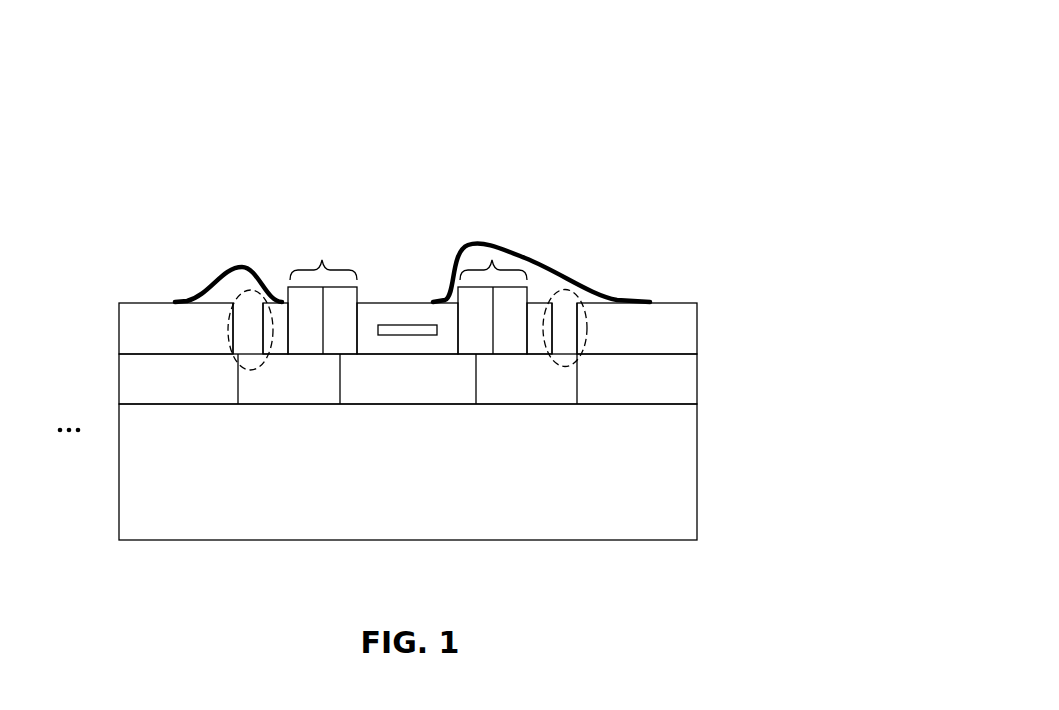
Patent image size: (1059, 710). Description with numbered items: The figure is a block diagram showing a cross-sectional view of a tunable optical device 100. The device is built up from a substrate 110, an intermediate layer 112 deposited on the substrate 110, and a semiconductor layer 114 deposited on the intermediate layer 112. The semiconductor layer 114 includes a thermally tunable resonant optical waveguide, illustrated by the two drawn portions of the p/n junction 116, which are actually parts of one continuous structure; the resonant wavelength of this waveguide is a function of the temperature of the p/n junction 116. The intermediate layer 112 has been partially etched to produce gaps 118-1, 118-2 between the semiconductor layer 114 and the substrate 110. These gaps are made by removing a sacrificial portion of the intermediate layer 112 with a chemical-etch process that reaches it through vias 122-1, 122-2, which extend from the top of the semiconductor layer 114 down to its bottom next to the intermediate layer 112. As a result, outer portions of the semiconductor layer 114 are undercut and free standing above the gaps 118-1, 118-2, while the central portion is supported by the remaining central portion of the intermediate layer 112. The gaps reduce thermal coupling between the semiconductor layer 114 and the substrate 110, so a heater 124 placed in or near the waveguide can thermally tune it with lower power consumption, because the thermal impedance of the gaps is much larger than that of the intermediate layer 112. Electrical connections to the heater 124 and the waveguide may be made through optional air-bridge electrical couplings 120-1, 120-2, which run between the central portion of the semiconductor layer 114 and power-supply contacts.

The tunable optical device 100 is at (463, 305).
The substrate 110 is at (393, 494).
The intermediate layer 112 is at (407, 385).
The semiconductor layer 114 is at (645, 327).
The p/n junction 116 is at (322, 260).
The gap 118-1 is at (283, 385).
The gap 118-2 is at (535, 385).
The air-bridge electrical coupling 120-1 is at (225, 272).
The air-bridge electrical coupling 120-2 is at (627, 295).
The via 122-1 is at (252, 290).
The via 122-2 is at (563, 290).
The heater 124 is at (391, 335).